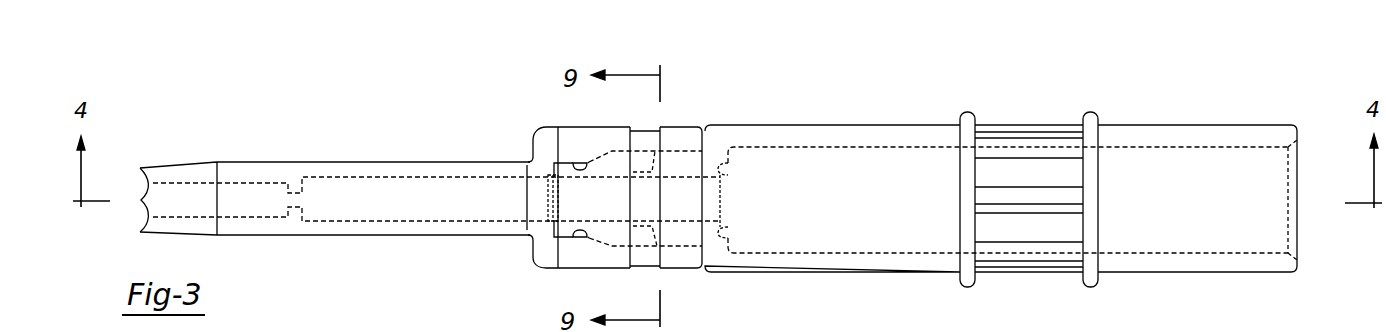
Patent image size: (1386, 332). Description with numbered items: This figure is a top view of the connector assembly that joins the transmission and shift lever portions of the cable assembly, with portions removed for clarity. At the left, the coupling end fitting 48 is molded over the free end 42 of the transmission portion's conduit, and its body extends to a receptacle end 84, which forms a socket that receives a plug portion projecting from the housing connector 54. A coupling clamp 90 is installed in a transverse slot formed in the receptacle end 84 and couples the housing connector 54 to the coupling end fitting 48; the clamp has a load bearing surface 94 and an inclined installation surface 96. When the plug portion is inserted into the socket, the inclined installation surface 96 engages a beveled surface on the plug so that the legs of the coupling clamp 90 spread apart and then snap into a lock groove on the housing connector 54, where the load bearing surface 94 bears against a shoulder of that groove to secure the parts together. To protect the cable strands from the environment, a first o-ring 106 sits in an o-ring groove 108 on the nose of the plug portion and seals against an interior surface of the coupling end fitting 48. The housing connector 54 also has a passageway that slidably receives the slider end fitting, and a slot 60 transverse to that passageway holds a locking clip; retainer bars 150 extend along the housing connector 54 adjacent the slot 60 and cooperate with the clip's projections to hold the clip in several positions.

The coupling end fitting 48 is at (393, 161).
The free end 42 is at (578, 233).
The o-ring groove 108 is at (578, 162).
The first o-ring 106 is at (578, 238).
The receptacle end 84 is at (683, 135).
The load bearing surface 94 is at (632, 235).
The inclined installation surface 96 is at (660, 235).
The coupling clamp 90 is at (647, 157).
The housing connector 54 is at (1204, 126).
The slot 60 is at (997, 204).
The retainer bars 150 is at (1033, 120).